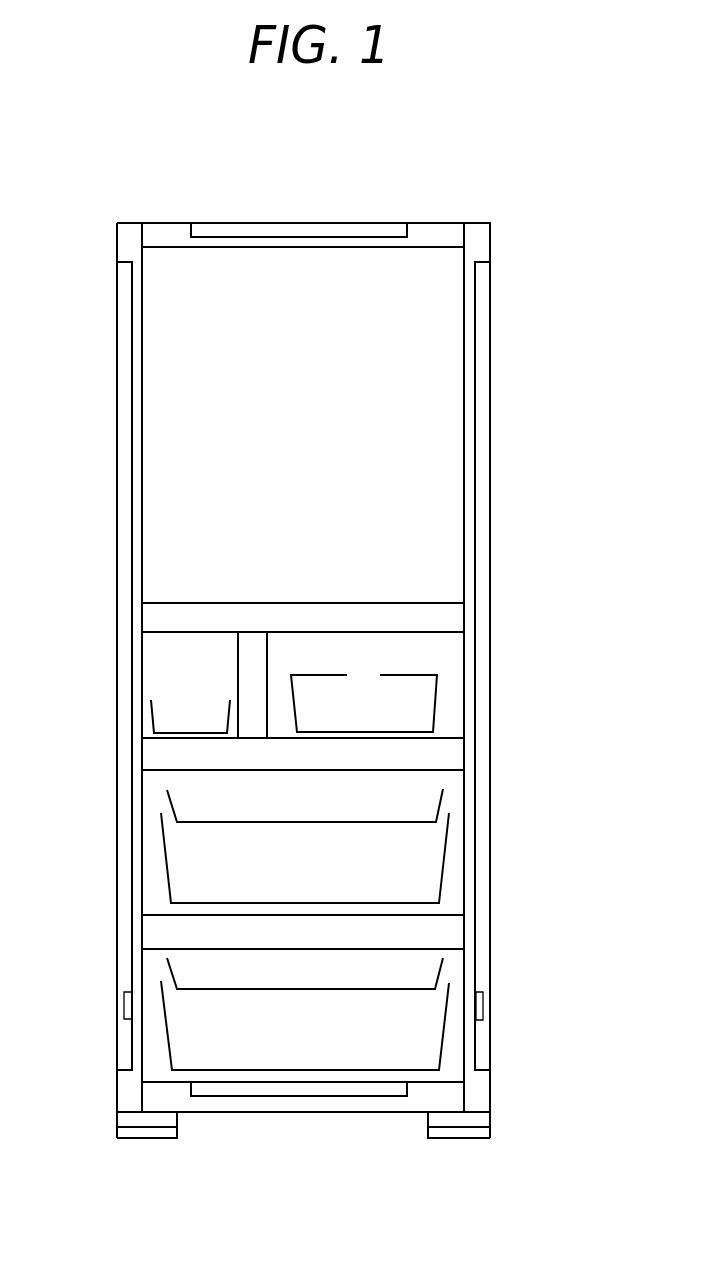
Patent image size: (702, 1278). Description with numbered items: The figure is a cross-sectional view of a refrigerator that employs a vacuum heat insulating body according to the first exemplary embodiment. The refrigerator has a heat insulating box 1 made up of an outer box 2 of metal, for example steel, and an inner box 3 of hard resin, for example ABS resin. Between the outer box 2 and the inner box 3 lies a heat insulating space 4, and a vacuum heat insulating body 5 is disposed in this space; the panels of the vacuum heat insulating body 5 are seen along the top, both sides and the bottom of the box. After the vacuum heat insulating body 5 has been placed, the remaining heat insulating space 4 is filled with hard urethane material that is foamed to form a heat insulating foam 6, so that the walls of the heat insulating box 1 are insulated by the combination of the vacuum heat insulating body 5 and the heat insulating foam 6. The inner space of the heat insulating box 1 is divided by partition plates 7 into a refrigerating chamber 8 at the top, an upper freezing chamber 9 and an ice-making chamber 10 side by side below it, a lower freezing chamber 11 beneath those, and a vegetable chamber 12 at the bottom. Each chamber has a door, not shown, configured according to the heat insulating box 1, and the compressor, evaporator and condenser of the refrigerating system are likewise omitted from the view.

The heat insulating box 1 is at (233, 198).
The outer box 2 is at (170, 223).
The inner box 3 is at (157, 247).
The heat insulating space 4 is at (433, 232).
The vacuum heat insulating body 5 is at (297, 232).
The heat insulating foam 6 is at (447, 237).
The partition plates 7 is at (438, 620).
The refrigerating chamber 8 is at (291, 436).
The upper freezing chamber 9 is at (354, 691).
The ice-making chamber 10 is at (204, 691).
The lower freezing chamber 11 is at (291, 881).
The vegetable chamber 12 is at (291, 1045).